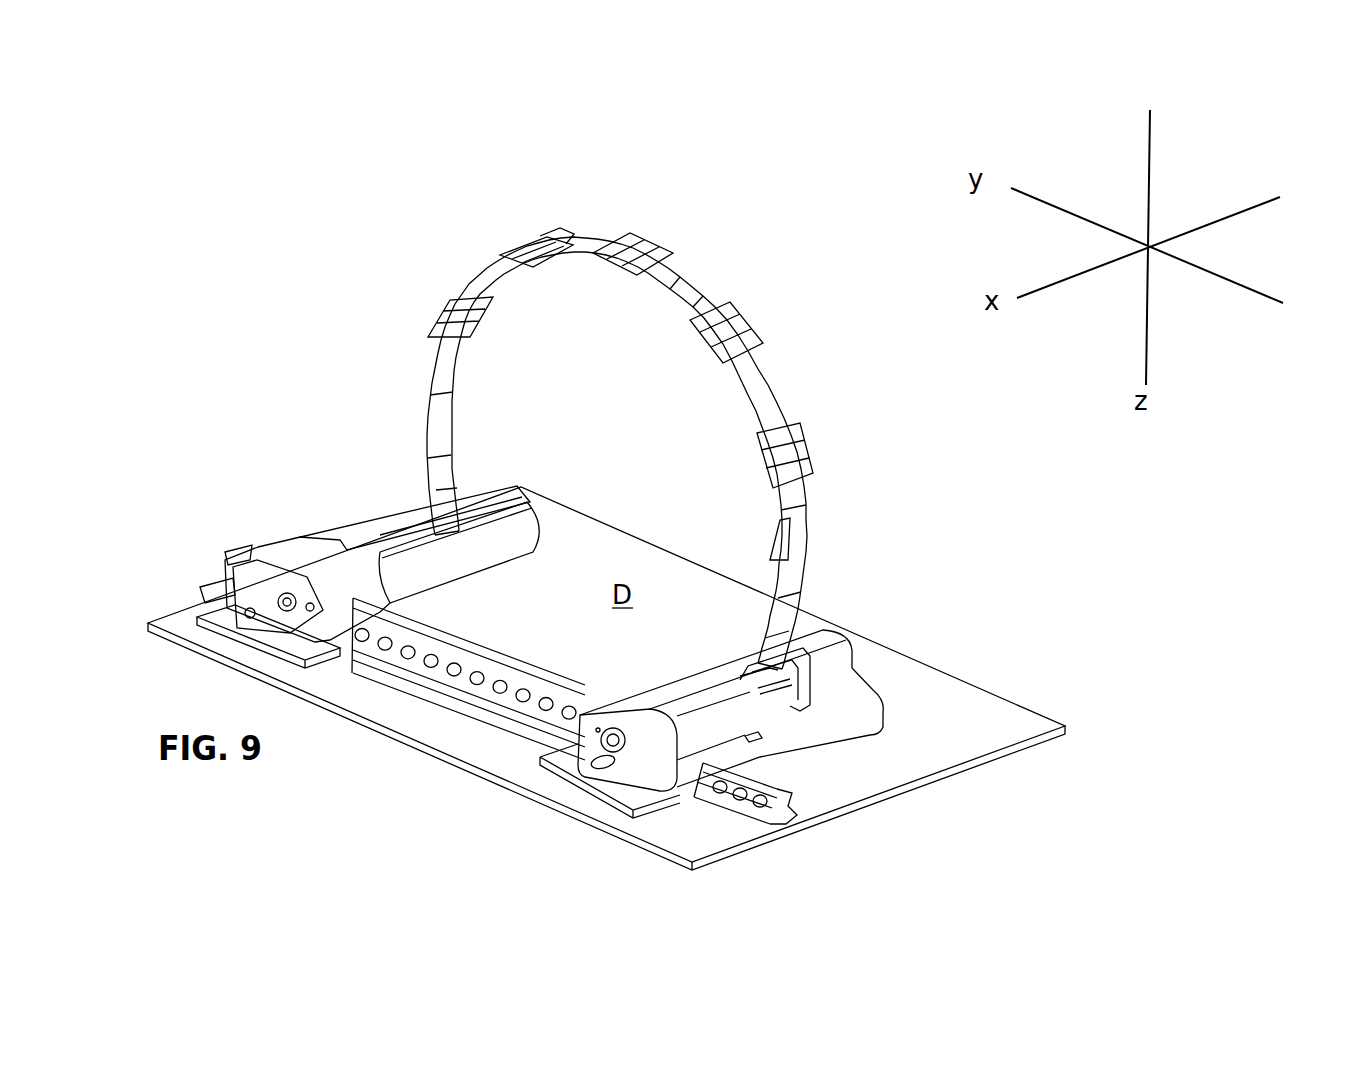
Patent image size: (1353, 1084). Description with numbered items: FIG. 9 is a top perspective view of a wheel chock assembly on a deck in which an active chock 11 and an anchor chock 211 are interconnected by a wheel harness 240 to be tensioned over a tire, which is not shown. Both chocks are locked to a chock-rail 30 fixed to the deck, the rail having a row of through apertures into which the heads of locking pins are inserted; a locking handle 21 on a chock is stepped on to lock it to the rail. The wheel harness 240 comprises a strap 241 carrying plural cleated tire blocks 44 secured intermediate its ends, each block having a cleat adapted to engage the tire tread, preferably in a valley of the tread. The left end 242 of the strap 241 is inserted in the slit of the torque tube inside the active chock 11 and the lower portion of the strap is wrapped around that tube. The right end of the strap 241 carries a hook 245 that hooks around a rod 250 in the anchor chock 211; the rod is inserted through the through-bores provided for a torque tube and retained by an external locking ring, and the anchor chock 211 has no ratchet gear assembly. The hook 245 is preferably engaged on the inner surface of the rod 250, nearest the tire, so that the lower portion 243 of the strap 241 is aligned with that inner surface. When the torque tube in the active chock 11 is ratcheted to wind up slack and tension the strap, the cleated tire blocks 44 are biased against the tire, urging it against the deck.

The active chock 11 is at (265, 540).
The locking handle 21 is at (587, 782).
The chock-rail 30 is at (473, 653).
The cleated tire blocks 44 is at (515, 243).
The anchor chock 211 is at (855, 757).
The wheel harness 240 is at (780, 375).
The strap 241 is at (687, 280).
The left end of strap 242 is at (433, 493).
The lower portion of strap 243 is at (773, 627).
The hook 245 is at (743, 667).
The rod 250 is at (783, 683).